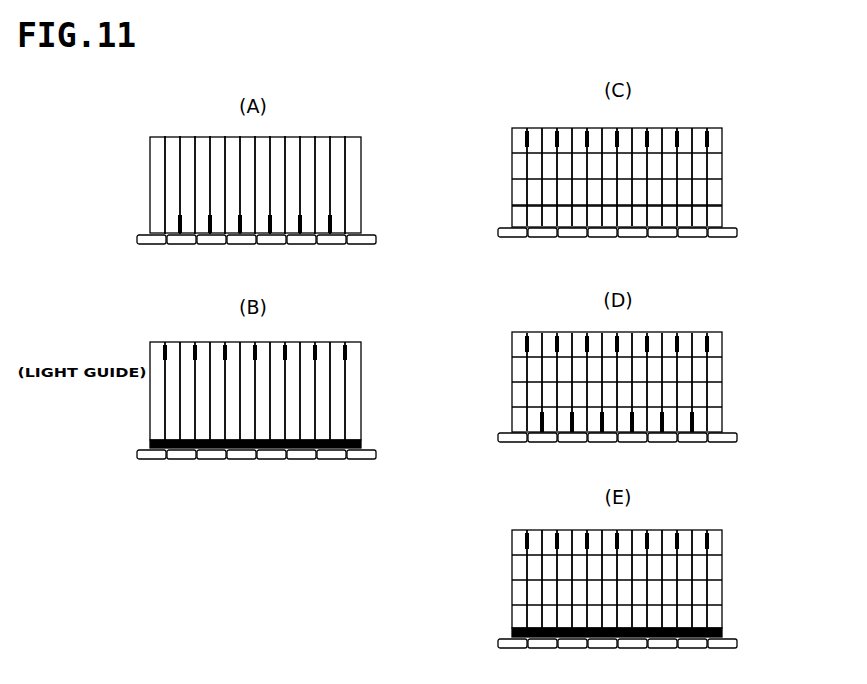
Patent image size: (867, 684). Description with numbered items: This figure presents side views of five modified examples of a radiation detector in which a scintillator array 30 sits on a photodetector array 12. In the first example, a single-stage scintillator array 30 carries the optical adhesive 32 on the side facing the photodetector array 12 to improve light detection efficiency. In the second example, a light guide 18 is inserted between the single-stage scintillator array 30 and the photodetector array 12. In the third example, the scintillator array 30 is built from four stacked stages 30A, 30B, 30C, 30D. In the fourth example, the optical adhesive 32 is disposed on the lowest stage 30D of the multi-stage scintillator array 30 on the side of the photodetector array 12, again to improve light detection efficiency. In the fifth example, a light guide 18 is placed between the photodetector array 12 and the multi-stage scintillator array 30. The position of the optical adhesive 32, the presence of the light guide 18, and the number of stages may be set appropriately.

The photodetector array 12 is at (378, 237).
The light guide 18 is at (146, 446).
The scintillator array 30 is at (363, 162).
The scintillator array stage 30A is at (722, 138).
The scintillator array stage 30B is at (722, 165).
The scintillator array stage 30C is at (722, 192).
The scintillator array stage 30D is at (722, 218).
The optical adhesive 32 is at (287, 152).